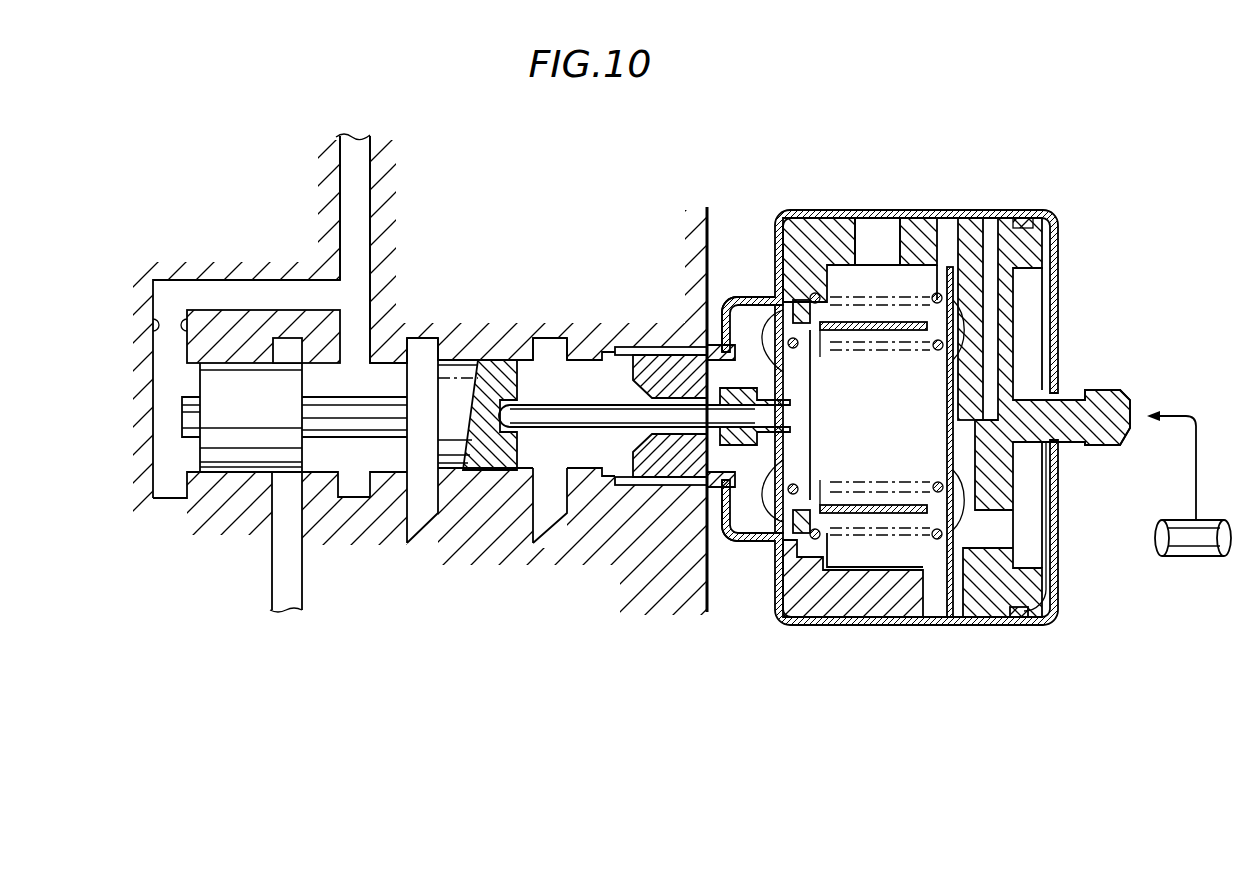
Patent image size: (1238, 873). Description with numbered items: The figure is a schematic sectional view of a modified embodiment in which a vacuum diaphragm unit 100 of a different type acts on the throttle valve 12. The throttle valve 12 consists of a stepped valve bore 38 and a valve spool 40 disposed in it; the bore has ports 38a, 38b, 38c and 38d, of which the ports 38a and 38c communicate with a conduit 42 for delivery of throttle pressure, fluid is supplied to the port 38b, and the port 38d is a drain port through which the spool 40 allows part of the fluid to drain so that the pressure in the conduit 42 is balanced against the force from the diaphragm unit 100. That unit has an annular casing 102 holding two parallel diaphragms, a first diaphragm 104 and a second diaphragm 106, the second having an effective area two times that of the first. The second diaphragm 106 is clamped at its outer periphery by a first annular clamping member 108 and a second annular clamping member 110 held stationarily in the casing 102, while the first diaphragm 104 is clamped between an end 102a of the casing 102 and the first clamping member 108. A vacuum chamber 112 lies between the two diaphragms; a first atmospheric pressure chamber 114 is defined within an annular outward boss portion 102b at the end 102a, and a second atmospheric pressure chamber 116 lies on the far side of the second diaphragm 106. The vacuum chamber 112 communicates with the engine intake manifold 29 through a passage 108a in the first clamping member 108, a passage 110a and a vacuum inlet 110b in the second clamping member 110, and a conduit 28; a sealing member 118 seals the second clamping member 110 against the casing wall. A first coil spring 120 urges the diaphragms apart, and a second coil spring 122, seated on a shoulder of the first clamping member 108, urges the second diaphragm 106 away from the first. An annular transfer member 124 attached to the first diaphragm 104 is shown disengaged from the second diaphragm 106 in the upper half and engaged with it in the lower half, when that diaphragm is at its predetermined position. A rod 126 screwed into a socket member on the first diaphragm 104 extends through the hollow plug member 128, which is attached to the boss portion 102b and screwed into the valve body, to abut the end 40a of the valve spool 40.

The throttle valve 12 is at (447, 278).
The conduit 28 is at (1195, 453).
The engine intake manifold 29 is at (1187, 550).
The valve bore 38 is at (318, 465).
The port 38a is at (170, 490).
The port 38b is at (287, 480).
The port 38c is at (360, 488).
The drain port 38d is at (425, 522).
The valve spool 40 is at (218, 397).
The end of valve spool 40a is at (517, 450).
The conduit 42 is at (353, 233).
The vacuum diaphragm unit 100 is at (918, 394).
The annular casing 102 is at (986, 210).
The end of casing 102a is at (767, 590).
The annular outward boss portion 102b is at (750, 298).
The first diaphragm 104 is at (767, 522).
The second diaphragm 106 is at (942, 560).
The first annular clamping member 108 is at (822, 608).
The passage 108a is at (880, 216).
The second annular clamping member 110 is at (977, 608).
The passage 110a is at (988, 310).
The vacuum inlet 110b is at (1102, 420).
The vacuum chamber 112 is at (882, 595).
The first atmospheric pressure chamber 114 is at (692, 528).
The second atmospheric pressure chamber 116 is at (1042, 582).
The sealing member 118 is at (1022, 618).
The first coil spring 120 is at (810, 487).
The second coil spring 122 is at (882, 528).
The annular transfer member 124 is at (737, 300).
The rod 126 is at (553, 408).
The plug member 128 is at (655, 356).